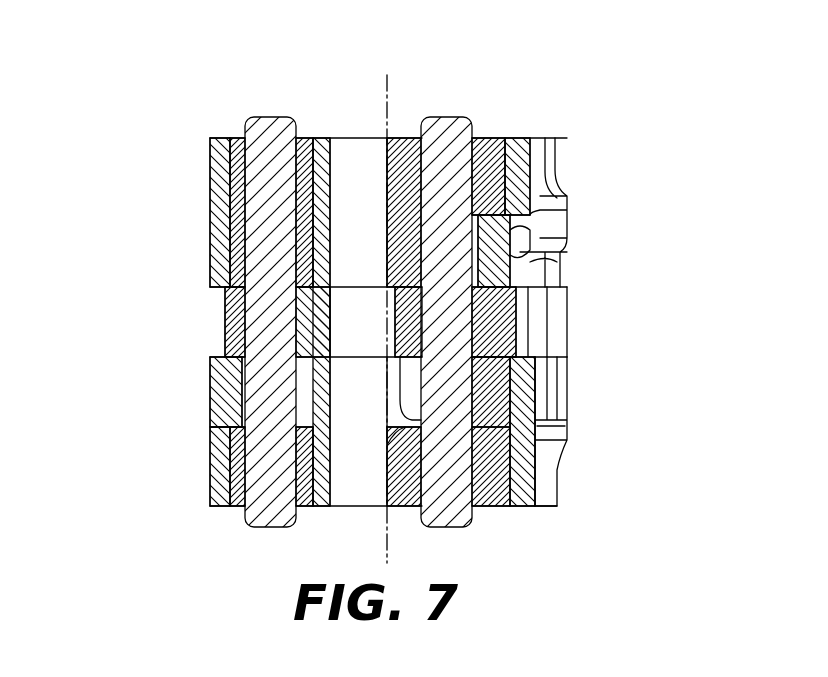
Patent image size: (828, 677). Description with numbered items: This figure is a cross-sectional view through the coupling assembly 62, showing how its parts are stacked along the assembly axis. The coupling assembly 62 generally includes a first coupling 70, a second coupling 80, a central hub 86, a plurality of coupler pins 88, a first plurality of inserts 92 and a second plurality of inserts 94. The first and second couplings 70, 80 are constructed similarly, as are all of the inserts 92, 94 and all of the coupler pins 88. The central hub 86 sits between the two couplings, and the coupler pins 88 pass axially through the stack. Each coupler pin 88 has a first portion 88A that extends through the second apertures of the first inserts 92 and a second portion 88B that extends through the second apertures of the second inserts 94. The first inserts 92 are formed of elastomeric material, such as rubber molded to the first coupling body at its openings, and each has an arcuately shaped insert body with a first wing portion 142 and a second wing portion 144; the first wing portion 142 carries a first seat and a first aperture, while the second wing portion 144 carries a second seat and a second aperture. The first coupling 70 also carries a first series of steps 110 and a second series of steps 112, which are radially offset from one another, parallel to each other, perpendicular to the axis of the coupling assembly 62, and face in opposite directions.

The coupling assembly 62 is at (166, 88).
The first coupling 70 is at (218, 413).
The second coupling 80 is at (216, 196).
The central hub 86 is at (230, 328).
The coupler pins 88 is at (258, 128).
The first portions of coupler pins 88A is at (266, 457).
The second portions of coupler pins 88B is at (268, 171).
The first inserts 92 is at (238, 502).
The second inserts 94 is at (305, 148).
The first series of steps 110 is at (491, 414).
The second series of steps 112 is at (389, 460).
The first wing portion 142 is at (492, 390).
The second wing portion 144 is at (403, 502).